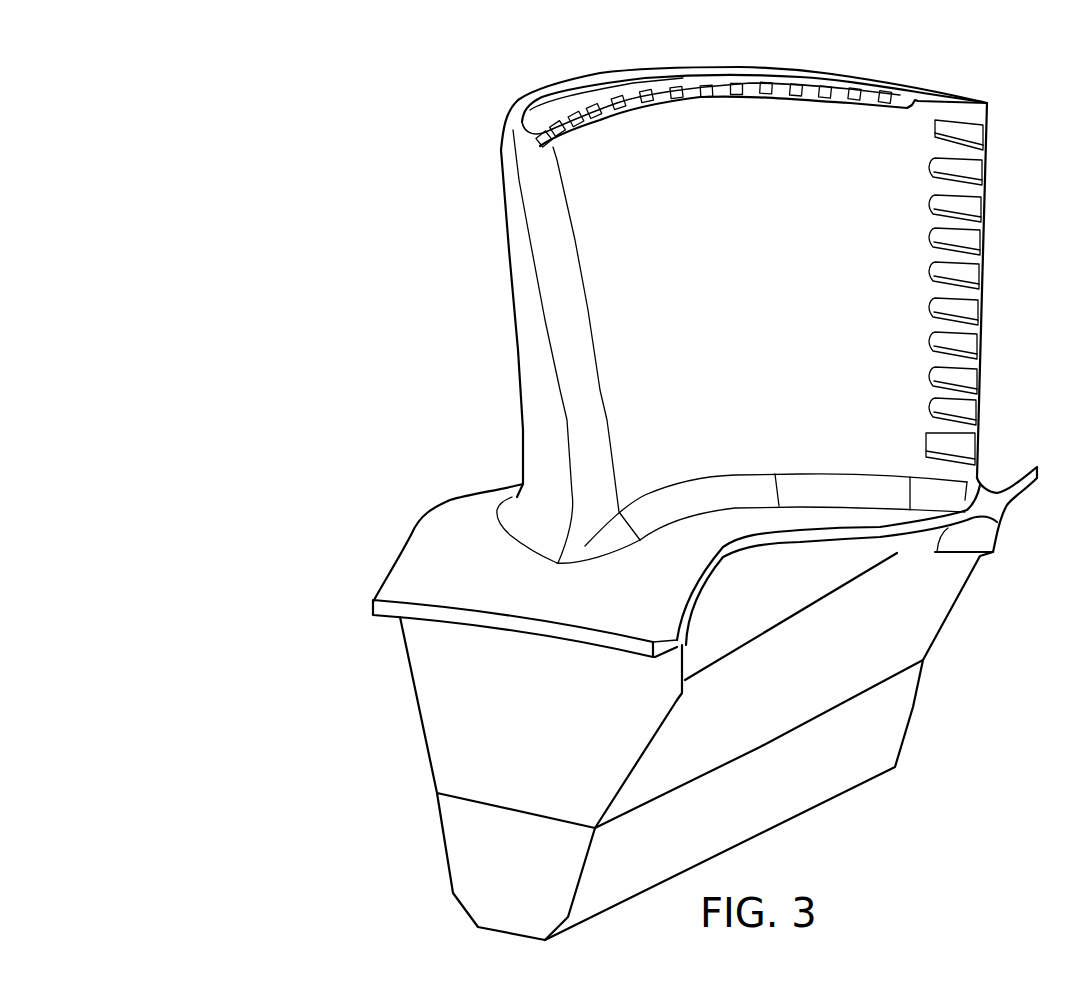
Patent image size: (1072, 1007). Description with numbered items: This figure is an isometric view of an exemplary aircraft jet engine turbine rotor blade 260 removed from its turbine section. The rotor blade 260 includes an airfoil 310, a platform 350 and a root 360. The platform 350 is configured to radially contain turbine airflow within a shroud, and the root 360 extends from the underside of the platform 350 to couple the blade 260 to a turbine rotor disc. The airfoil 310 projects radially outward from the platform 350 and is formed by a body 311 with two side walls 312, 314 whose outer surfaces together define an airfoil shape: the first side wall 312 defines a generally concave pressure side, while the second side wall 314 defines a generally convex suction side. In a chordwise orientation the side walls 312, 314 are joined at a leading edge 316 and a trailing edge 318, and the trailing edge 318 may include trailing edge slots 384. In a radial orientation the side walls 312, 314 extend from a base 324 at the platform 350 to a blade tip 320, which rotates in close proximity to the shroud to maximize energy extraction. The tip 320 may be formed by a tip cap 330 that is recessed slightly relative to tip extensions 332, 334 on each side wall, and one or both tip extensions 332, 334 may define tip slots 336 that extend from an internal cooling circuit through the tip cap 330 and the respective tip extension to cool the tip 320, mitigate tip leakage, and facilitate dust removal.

The rotor blade 260 is at (291, 271).
The airfoil 310 is at (508, 253).
The body 311 is at (497, 147).
The first side wall 312 is at (650, 169).
The second side wall 314 is at (523, 463).
The leading edge 316 is at (543, 362).
The trailing edge 318 is at (993, 143).
The blade tip 320 is at (515, 106).
The base 324 is at (681, 515).
The tip cap 330 is at (556, 106).
The tip extension 332 is at (679, 85).
The tip extension 334 is at (598, 78).
The tip slots 336 is at (742, 87).
The platform 350 is at (403, 562).
The root 360 is at (418, 722).
The trailing edge slots 384 is at (973, 310).